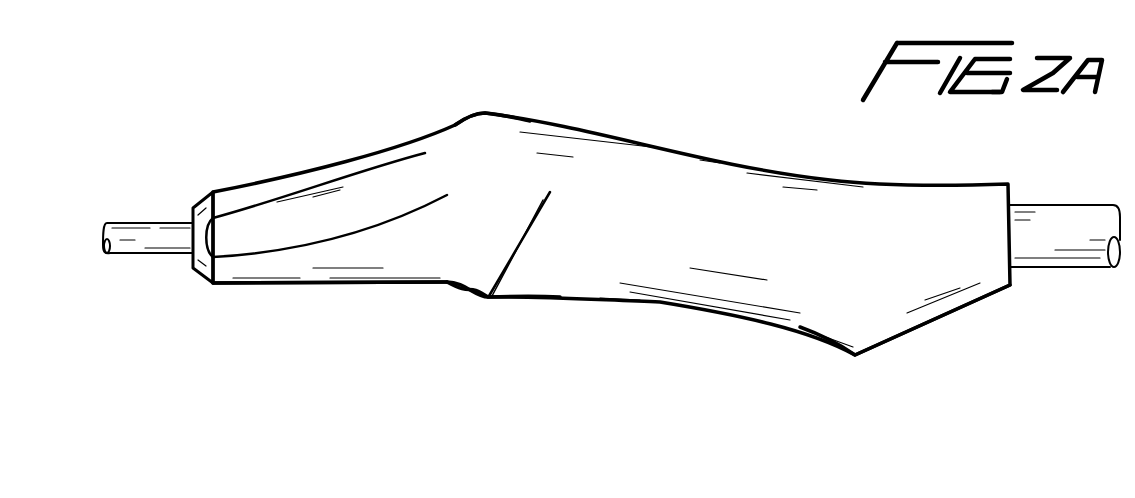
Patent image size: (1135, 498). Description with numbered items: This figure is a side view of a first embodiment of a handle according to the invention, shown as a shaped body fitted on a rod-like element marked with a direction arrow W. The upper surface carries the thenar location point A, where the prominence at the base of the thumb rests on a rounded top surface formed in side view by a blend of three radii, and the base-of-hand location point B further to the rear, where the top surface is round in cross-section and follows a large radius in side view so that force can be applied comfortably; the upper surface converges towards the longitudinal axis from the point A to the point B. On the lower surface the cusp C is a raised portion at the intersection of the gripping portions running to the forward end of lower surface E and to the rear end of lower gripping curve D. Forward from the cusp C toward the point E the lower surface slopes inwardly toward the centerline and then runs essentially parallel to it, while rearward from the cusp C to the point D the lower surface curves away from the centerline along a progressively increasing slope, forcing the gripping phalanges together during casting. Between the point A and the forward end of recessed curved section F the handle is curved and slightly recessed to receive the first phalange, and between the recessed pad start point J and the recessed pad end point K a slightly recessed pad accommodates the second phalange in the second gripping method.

The thenar location point A is at (485, 107).
The base-of-hand location point B is at (760, 167).
The cusp C is at (488, 308).
The rear end of lower gripping curve D is at (855, 367).
The forward end of lower surface E is at (370, 292).
The forward end of recessed curved section F is at (213, 182).
The recessed pad start point J is at (422, 177).
The recessed pad end point K is at (237, 228).
The wire / feed direction W is at (177, 288).